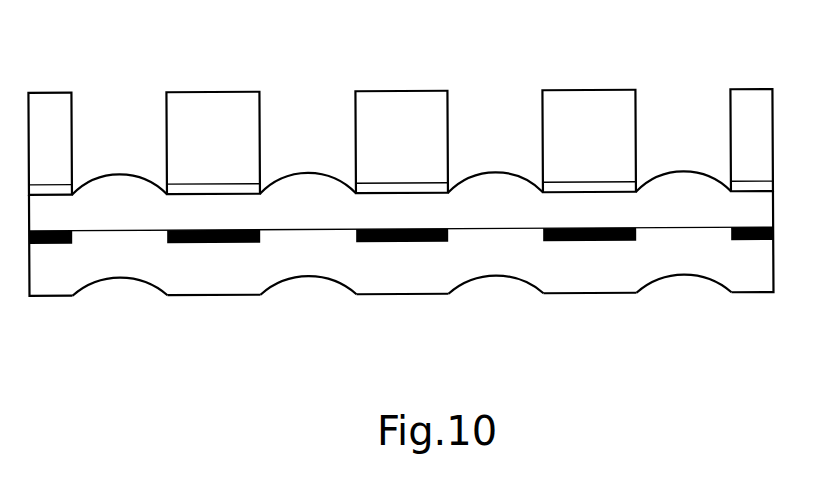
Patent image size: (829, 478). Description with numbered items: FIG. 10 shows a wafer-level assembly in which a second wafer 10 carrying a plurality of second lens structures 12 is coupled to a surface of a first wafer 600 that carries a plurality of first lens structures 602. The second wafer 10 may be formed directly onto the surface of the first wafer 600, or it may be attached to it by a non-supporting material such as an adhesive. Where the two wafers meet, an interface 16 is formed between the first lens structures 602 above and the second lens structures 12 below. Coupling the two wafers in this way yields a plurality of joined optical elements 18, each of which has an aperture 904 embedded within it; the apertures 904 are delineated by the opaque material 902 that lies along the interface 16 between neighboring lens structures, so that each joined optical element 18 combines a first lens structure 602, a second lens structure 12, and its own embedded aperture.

The joined optical element 18 is at (207, 78).
The first lens structure 602 is at (480, 188).
The aperture 904 is at (729, 218).
The material 902 is at (380, 243).
The interface 16 is at (465, 243).
The second lens structure 12 is at (524, 277).
The second wafer 10 is at (583, 293).
The first wafer 600 is at (760, 215).